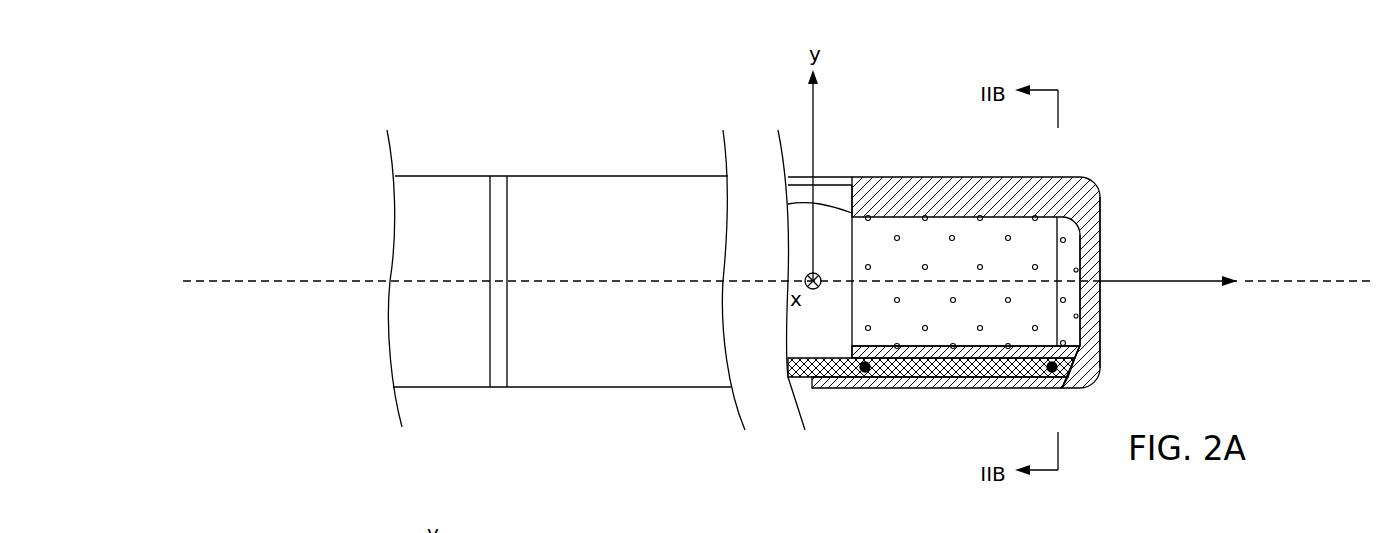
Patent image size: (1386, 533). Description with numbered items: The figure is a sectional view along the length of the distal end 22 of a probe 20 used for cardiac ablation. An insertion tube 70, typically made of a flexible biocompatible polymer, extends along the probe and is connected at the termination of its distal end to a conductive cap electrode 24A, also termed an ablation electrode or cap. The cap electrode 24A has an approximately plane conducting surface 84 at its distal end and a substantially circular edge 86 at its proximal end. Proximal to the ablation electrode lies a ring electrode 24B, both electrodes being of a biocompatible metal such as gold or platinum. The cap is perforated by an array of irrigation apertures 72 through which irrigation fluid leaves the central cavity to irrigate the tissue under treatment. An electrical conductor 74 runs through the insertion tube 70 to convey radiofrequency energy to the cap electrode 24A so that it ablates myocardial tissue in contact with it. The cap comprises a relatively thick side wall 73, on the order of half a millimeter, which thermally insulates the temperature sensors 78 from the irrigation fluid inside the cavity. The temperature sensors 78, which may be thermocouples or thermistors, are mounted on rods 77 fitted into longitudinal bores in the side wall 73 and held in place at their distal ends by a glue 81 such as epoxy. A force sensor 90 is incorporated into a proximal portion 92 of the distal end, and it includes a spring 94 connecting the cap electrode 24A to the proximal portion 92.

The probe 20 is at (442, 176).
The distal end 22 is at (590, 80).
The conductive cap electrode 24A is at (890, 176).
The ring electrode 24B is at (493, 176).
The insertion tube 70 is at (446, 388).
The irrigation apertures 72 is at (899, 301).
The side wall 73 is at (944, 195).
The electrical conductor 74 is at (840, 213).
The rods 77 is at (958, 378).
The temperature sensors 78 is at (877, 378).
The glue 81 is at (1083, 387).
The plane conducting surface 84 is at (1100, 230).
The circular edge 86 is at (812, 388).
The force sensor 90 is at (602, 425).
The proximal portion 92 is at (403, 176).
The spring 94 is at (212, 284).